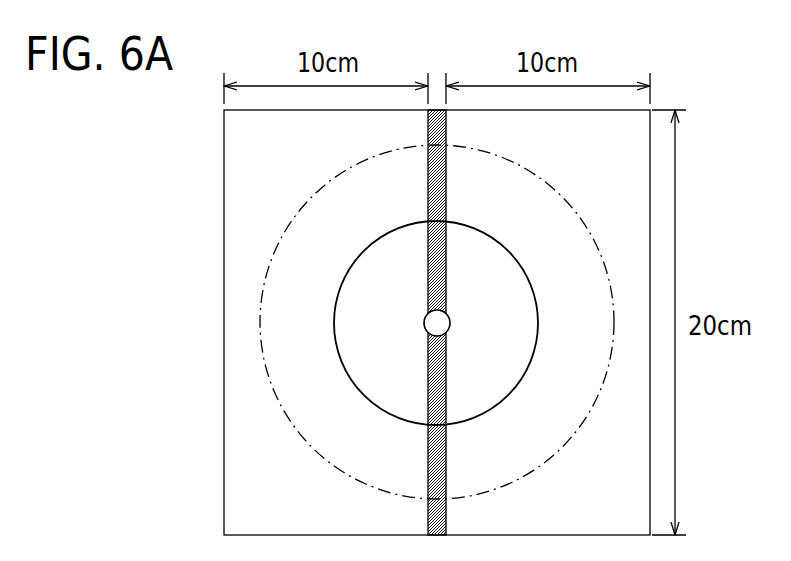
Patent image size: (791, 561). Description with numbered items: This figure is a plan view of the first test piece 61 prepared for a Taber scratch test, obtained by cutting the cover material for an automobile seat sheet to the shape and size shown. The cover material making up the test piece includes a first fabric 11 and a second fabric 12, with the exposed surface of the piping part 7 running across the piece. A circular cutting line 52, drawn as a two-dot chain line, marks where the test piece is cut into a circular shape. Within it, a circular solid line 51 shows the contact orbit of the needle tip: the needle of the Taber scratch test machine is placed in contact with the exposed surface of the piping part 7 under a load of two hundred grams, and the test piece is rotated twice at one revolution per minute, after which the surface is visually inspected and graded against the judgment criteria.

The first test piece 61 is at (674, 79).
The piping part 7 is at (437, 110).
The first fabric 11 is at (305, 265).
The second fabric 12 is at (565, 256).
The circular solid line 51 is at (337, 353).
The circular cutting line 52 is at (289, 428).